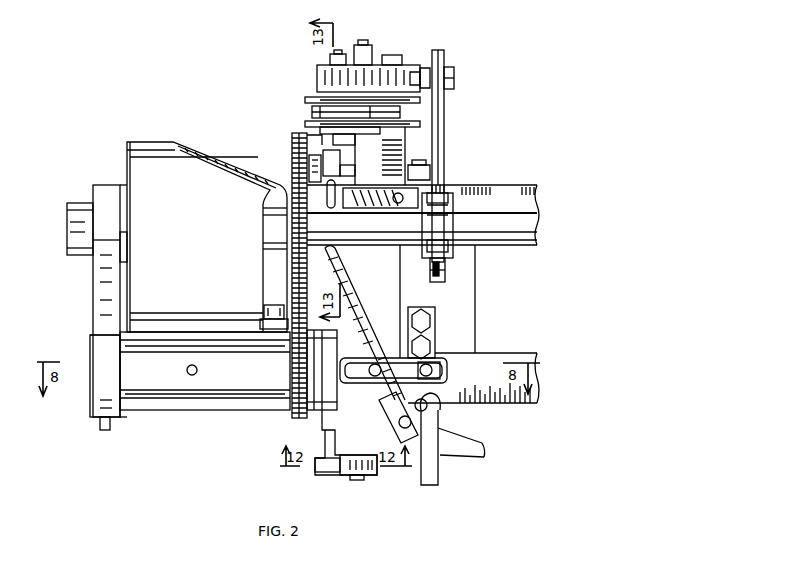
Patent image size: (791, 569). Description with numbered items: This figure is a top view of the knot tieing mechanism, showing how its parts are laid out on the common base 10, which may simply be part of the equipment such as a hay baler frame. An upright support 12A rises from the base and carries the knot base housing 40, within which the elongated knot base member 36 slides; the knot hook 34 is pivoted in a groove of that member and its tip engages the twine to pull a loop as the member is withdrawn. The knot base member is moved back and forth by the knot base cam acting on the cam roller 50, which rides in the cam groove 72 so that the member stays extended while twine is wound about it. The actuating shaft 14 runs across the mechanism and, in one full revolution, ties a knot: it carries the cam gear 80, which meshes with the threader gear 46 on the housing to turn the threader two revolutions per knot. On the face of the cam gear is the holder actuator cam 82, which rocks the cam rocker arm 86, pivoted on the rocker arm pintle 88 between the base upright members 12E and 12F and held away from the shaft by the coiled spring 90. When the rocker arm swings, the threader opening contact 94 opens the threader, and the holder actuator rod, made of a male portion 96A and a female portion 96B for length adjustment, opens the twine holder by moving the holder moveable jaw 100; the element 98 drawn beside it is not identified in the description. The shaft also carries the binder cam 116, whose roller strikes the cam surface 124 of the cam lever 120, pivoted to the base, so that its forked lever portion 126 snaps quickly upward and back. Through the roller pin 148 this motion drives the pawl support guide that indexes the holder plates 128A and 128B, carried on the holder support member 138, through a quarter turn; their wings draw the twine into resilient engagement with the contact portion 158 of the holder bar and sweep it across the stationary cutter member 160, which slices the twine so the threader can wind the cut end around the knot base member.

The common base 10 is at (504, 403).
The upright support 12A is at (105, 298).
The base upright member 12E is at (345, 188).
The base upright member 12F is at (440, 176).
The actuating shaft 14 is at (503, 222).
The knot hook 34 is at (412, 365).
The knot base member 36 is at (440, 370).
The knot base housing 40 is at (214, 412).
The threader gear 46 is at (297, 372).
The cam roller 50 is at (270, 304).
The cam groove 72 is at (256, 185).
The cam gear 80 is at (292, 150).
The holder actuator cam 82 is at (309, 170).
The cam rocker arm 86 is at (307, 136).
The rocker arm pintle 88 is at (375, 210).
The coiled spring 90 is at (390, 206).
The threader opening contact 94 is at (333, 208).
The male portion of holder actuator rod 96A is at (360, 313).
The female portion of holder actuator rod 96B is at (343, 260).
The lever 98 is at (438, 430).
The holder moveable jaw 100 is at (470, 458).
The binder cam 116 is at (455, 228).
The cam lever 120 is at (436, 282).
The cam surface 124 is at (445, 264).
The forked lever portion 126 is at (444, 128).
The holder plate 128A is at (305, 124).
The holder plate 128B is at (305, 100).
The holder support member 138 is at (372, 62).
The roller pin 148 is at (448, 76).
The contact portion 158 is at (312, 112).
The cutter member 160 is at (378, 132).